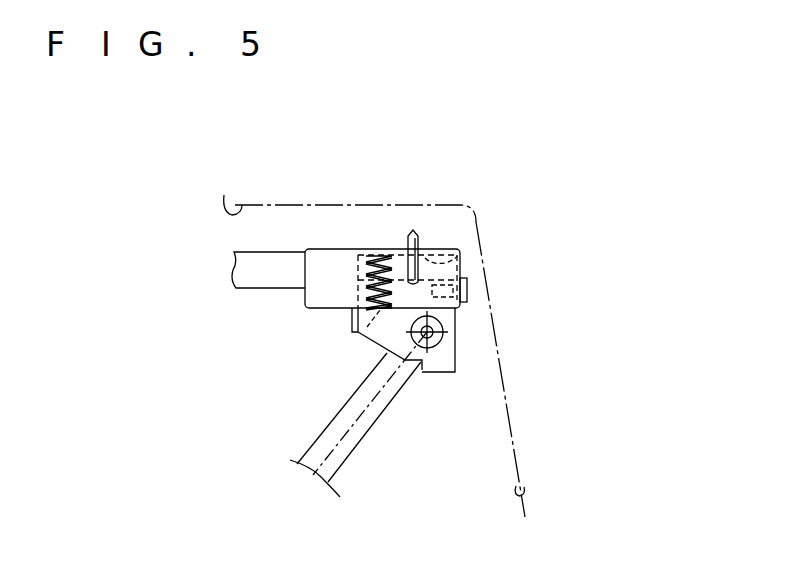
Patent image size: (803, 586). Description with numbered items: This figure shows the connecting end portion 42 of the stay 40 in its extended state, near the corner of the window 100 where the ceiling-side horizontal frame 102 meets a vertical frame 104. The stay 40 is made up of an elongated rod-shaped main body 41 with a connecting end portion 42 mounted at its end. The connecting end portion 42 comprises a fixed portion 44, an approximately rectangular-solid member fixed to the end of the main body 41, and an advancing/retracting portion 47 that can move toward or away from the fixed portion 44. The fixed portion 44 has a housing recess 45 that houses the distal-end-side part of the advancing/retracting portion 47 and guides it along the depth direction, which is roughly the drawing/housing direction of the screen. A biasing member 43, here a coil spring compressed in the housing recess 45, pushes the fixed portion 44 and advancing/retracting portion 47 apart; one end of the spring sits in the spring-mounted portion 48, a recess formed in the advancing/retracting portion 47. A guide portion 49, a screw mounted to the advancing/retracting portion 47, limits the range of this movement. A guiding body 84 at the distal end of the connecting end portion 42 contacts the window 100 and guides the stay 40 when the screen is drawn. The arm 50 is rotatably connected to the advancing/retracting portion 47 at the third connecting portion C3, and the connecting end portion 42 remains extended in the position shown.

The stay 40 is at (279, 322).
The main body 41 is at (243, 290).
The connecting end portion 42 is at (316, 311).
The biasing member 43 is at (362, 250).
The fixed portion 44 is at (320, 249).
The housing recess 45 is at (458, 261).
The advancing/retracting portion 47 is at (455, 365).
The spring-mounted portion 48 is at (384, 350).
The guide portion 49 is at (467, 289).
The arm 50 is at (381, 428).
The guiding body 84 is at (415, 229).
The window 100 is at (500, 456).
The ceiling-side horizontal frame 102 is at (225, 185).
The vertical frame 104 is at (524, 487).
The third connecting portion C3 is at (444, 328).